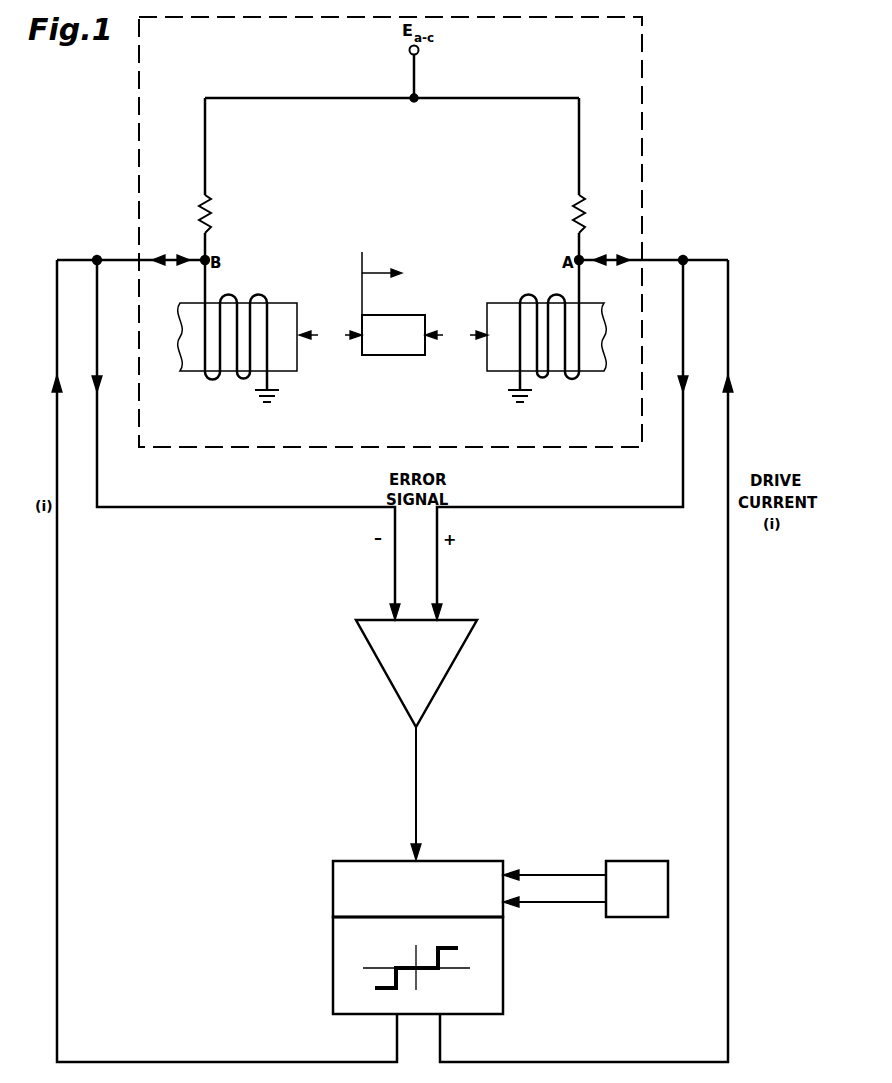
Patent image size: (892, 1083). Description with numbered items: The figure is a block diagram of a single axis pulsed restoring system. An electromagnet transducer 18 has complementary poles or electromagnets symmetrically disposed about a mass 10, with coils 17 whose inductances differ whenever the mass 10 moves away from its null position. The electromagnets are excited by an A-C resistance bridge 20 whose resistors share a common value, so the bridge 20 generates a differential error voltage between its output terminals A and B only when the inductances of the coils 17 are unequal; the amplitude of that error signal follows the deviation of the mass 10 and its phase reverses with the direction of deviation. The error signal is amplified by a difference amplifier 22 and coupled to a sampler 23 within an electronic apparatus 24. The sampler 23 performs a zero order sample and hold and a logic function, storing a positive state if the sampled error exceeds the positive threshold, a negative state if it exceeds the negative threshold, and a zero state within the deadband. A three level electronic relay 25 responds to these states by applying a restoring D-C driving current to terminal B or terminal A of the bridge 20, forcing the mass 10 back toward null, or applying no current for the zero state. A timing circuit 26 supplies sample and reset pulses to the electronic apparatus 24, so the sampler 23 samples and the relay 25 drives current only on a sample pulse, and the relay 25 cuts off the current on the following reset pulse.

The mass 10 is at (403, 345).
The coils 17 is at (561, 390).
The electromagnet transducer 18 is at (545, 447).
The A-C resistance bridge 20 is at (205, 155).
The difference amplifier 22 is at (416, 740).
The sampler 23 is at (418, 889).
The electronic apparatus 24 is at (333, 918).
The three level electronic relay 25 is at (363, 943).
The timing circuit 26 is at (585, 889).